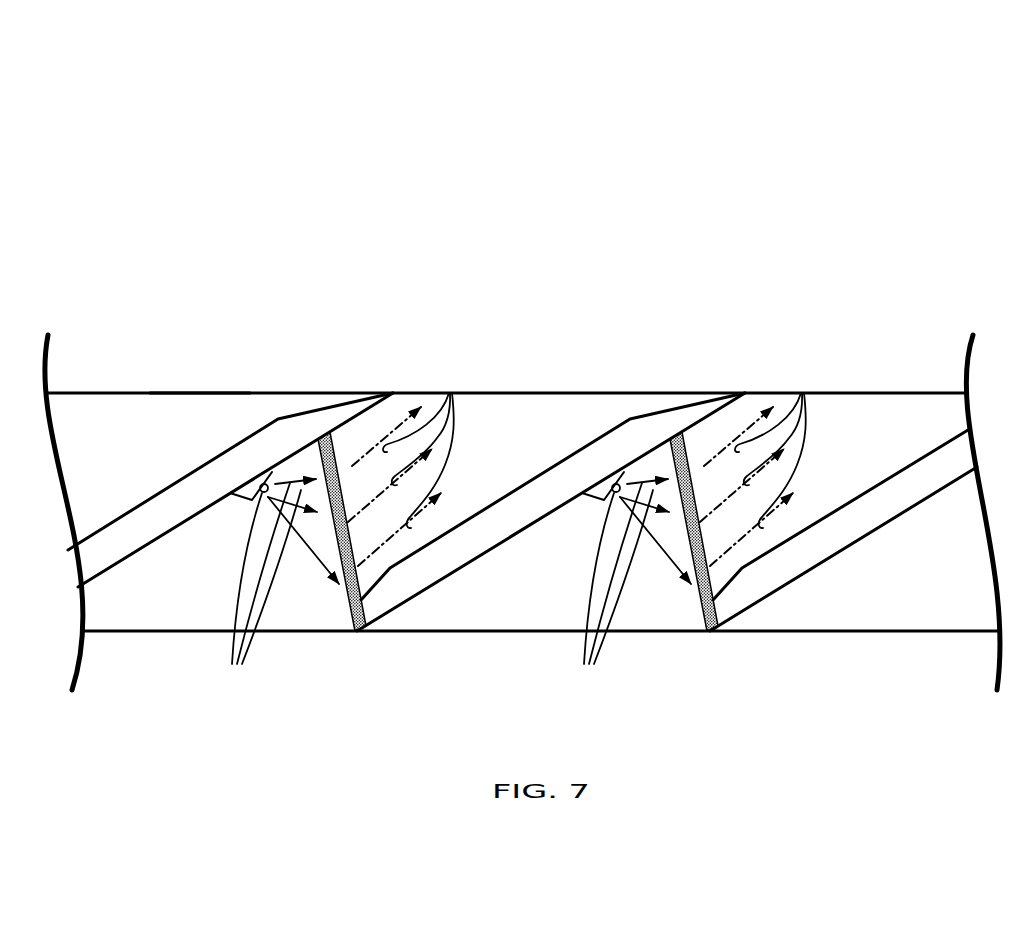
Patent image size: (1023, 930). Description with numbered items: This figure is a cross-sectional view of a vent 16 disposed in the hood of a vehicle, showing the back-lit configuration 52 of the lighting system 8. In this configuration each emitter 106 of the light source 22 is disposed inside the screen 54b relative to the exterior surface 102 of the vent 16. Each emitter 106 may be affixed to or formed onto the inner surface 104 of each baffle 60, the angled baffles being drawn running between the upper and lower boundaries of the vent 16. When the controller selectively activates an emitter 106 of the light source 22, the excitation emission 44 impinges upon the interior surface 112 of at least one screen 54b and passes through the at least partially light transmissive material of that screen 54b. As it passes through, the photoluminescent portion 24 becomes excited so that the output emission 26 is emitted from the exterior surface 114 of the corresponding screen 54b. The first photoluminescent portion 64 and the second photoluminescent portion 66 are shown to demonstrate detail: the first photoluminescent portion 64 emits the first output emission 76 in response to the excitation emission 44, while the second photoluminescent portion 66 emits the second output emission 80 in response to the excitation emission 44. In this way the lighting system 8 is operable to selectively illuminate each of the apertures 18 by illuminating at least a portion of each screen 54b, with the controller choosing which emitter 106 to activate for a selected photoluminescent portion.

The lighting system 8 is at (851, 94).
The back-lit configuration 52 is at (899, 214).
The vent 16 is at (172, 331).
The apertures 18 is at (588, 418).
The light source 22 is at (259, 486).
The photoluminescent portion 24 is at (537, 492).
The first photoluminescent portion 64 is at (339, 448).
The second photoluminescent portion 66 is at (691, 448).
The output emission 26 is at (621, 440).
The first output emission 76 is at (449, 393).
The second output emission 80 is at (801, 393).
The baffle 60 is at (196, 492).
The exterior surface 102 is at (193, 393).
The inner surface 104 is at (186, 477).
The emitter 106 is at (256, 494).
The excitation emission 44 is at (455, 585).
The interior surface 112 is at (362, 577).
The screen 54b is at (362, 577).
The exterior surface 114 is at (401, 607).